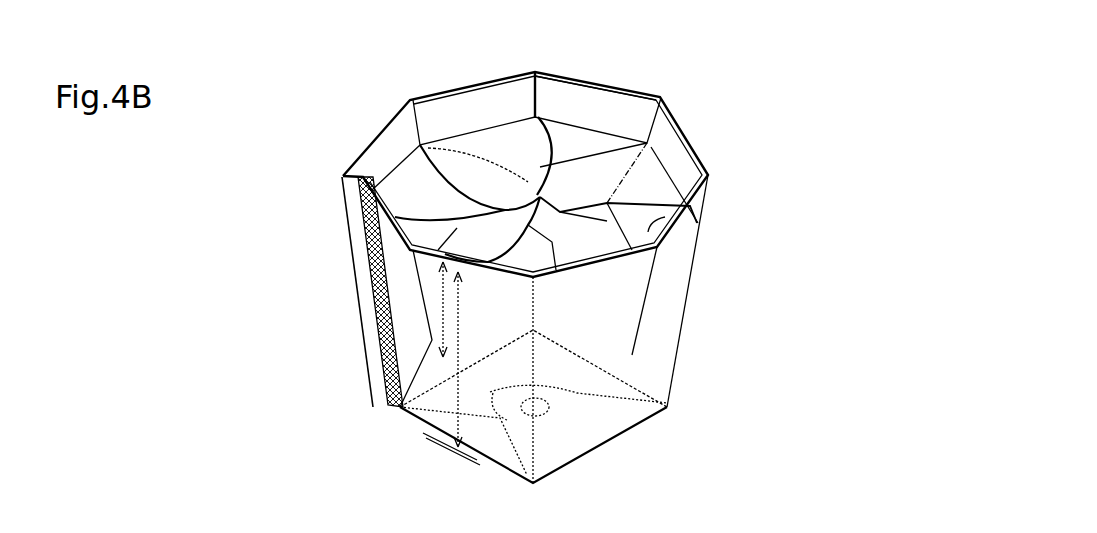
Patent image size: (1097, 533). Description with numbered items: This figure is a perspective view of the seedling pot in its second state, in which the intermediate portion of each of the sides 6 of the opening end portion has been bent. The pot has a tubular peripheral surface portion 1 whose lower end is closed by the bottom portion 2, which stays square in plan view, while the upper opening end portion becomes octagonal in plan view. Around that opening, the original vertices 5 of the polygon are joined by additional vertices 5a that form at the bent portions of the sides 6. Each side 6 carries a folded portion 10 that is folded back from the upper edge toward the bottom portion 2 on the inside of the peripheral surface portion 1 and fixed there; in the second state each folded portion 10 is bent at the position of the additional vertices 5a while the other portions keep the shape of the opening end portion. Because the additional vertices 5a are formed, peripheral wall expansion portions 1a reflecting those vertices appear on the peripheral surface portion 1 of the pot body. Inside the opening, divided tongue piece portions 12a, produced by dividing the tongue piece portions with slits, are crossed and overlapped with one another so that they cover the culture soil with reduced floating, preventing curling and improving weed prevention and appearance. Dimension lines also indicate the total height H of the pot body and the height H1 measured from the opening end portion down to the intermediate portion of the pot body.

The peripheral surface portion 1 is at (667, 349).
The peripheral wall expansion portion 1a is at (647, 310).
The bottom portion 2 is at (500, 432).
The vertices 5 is at (365, 175).
The additional vertex 5a is at (408, 98).
The edge 6 is at (418, 142).
The folded portion 10 is at (622, 108).
The divided tongue piece portion 12a is at (650, 165).
The total height of pot body H is at (460, 362).
The height from opening end portion to intermediate portion of pot body H1 is at (400, 409).